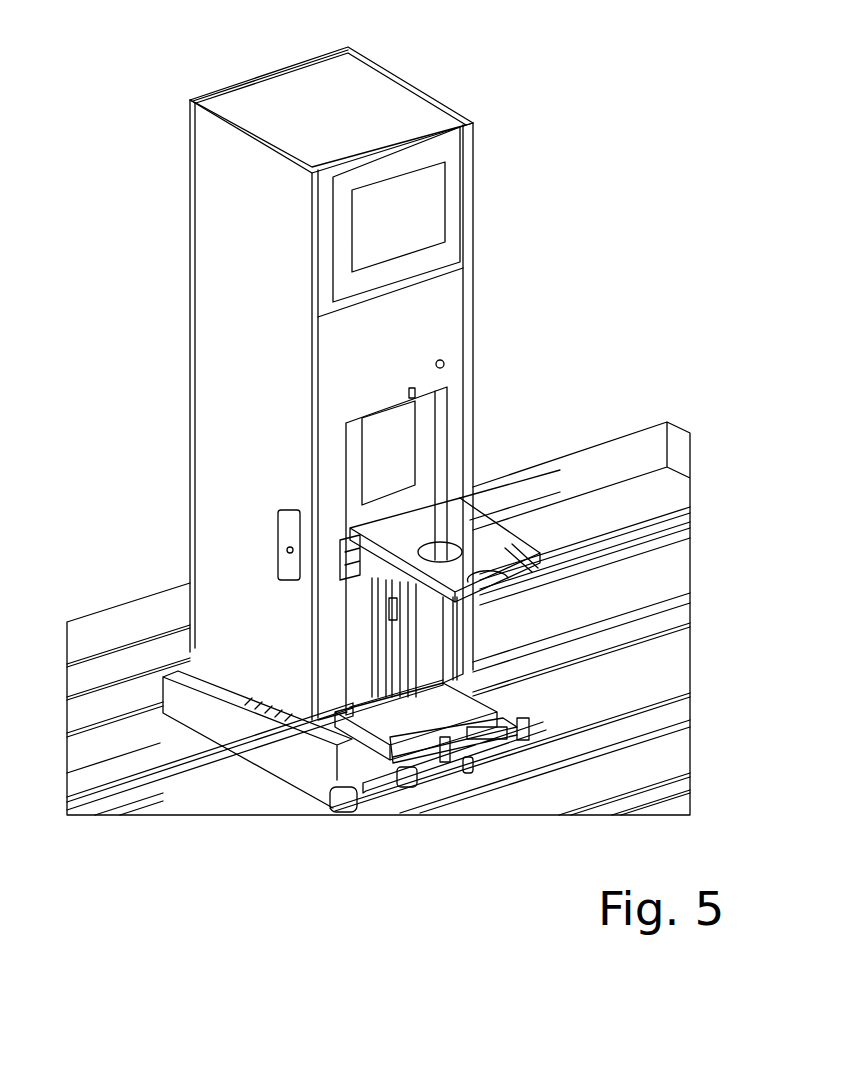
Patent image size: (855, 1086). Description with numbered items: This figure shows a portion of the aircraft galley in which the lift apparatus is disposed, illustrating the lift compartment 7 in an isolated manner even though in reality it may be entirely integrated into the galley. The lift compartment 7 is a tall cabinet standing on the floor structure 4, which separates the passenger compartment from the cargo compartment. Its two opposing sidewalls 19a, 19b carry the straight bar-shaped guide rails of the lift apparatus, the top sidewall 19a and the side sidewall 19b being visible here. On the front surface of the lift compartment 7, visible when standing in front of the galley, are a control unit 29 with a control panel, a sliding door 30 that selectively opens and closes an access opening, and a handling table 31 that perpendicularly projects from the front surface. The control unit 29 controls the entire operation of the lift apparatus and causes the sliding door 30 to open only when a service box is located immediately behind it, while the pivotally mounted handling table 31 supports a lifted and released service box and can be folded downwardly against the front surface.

The floor structure 4 is at (250, 808).
The lift compartment 7 is at (170, 275).
The sidewall 19a is at (440, 98).
The sidewall 19b is at (202, 313).
The control unit 29 is at (393, 212).
The sliding door 30 is at (410, 444).
The handling table 31 is at (460, 545).